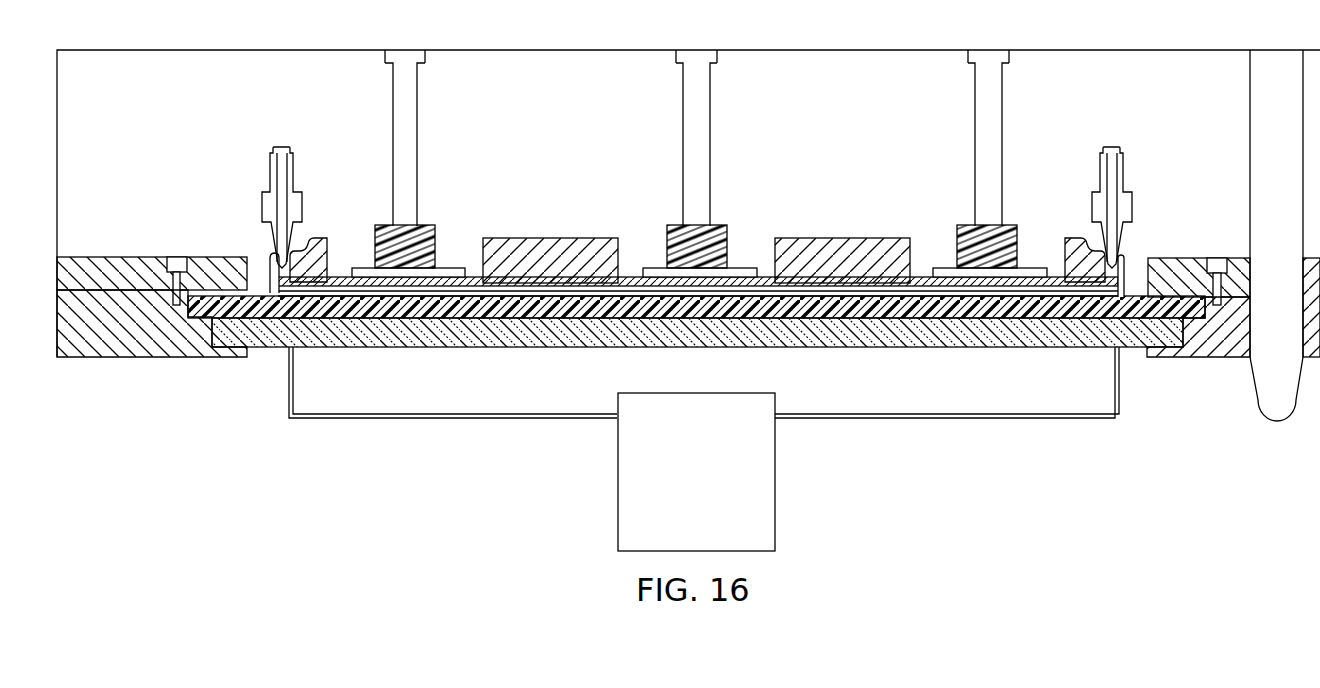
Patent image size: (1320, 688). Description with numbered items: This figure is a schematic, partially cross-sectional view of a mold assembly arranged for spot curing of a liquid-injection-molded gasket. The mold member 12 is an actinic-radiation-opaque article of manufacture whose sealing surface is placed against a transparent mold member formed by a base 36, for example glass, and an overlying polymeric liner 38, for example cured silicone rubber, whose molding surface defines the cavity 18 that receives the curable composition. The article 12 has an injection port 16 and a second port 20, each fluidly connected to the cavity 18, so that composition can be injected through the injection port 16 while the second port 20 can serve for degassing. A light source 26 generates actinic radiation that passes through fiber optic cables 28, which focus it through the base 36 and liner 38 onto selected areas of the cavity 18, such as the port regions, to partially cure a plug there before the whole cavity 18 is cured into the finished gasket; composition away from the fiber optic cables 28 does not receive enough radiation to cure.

The mold member 12 is at (833, 244).
The injection port 16 is at (1113, 276).
The cavity 18 is at (624, 288).
The second port 20 is at (283, 272).
The light source 26 is at (712, 481).
The fiber optic cables 28 is at (420, 419).
The base 36 is at (238, 344).
The polymeric liner 38 is at (203, 315).